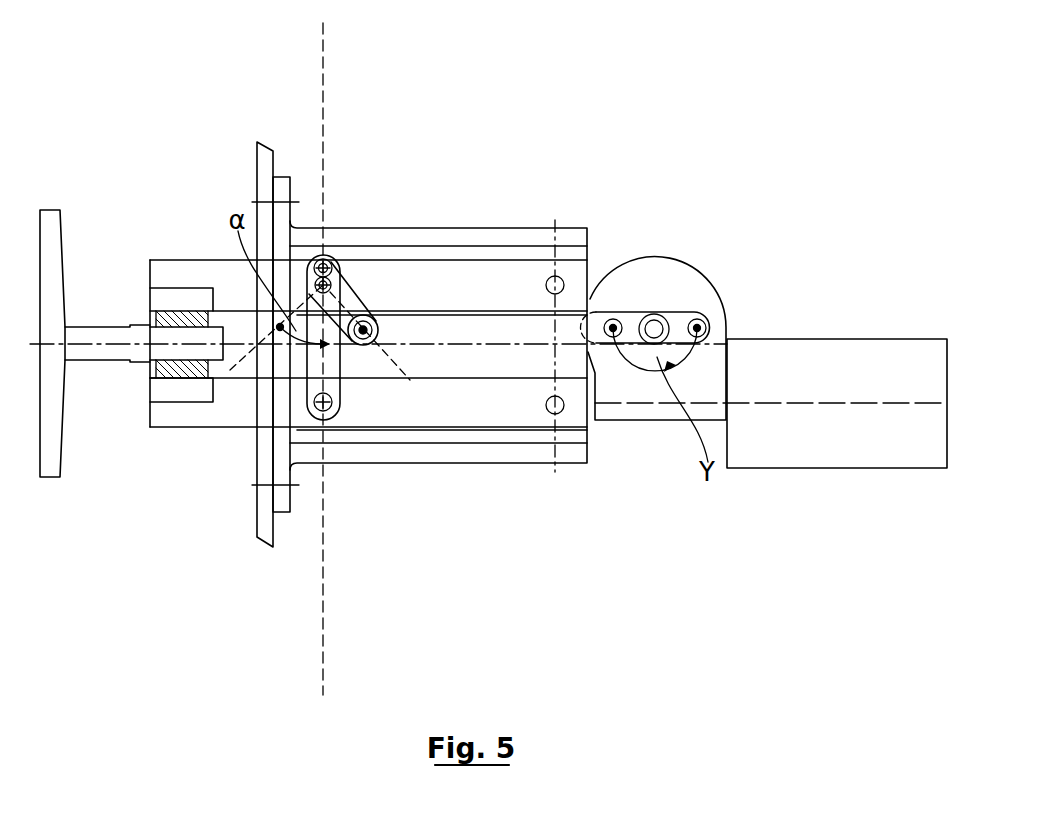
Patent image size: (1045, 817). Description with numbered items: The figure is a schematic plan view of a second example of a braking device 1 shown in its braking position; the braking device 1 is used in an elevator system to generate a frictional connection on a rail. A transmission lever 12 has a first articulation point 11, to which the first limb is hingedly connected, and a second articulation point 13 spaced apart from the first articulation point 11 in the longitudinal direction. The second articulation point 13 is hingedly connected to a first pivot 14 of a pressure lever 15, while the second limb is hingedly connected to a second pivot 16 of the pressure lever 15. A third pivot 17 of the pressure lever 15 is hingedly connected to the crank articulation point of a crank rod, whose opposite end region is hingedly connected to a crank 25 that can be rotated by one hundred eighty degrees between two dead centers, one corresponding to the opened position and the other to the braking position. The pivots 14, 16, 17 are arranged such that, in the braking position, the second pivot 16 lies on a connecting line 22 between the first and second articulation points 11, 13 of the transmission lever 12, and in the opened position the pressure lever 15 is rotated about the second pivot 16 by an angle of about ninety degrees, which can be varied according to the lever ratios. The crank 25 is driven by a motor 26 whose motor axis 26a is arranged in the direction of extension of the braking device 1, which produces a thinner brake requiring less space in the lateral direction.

The braking device 1 is at (564, 190).
The first articulation point 11 is at (328, 403).
The transmission lever 12 is at (312, 370).
The second articulation point 13 is at (333, 268).
The first pivot 14 is at (324, 258).
The pressure lever 15 is at (330, 287).
The second pivot 16 is at (332, 283).
The third pivot 17 is at (364, 334).
The connecting line 22 is at (314, 103).
The crank 25 is at (677, 321).
The motor 26 is at (858, 354).
The motor axis 26a is at (800, 403).